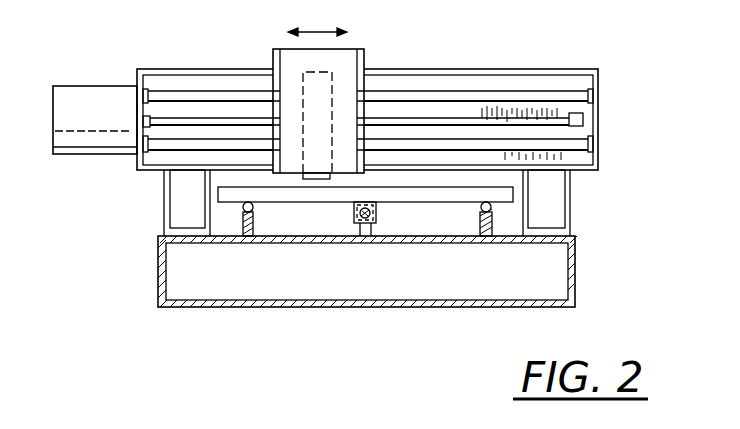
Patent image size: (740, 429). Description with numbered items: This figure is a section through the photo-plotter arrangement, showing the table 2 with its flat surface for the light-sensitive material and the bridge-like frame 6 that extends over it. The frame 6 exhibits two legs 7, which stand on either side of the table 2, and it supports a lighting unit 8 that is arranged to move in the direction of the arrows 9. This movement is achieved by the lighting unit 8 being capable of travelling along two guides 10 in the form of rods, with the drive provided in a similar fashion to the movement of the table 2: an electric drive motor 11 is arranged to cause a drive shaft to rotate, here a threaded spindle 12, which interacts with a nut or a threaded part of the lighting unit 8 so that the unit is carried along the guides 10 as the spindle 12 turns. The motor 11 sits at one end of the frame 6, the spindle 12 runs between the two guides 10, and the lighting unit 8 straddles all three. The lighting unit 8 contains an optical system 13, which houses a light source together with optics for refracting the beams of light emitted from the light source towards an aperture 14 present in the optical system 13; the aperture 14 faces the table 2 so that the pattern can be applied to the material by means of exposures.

The table 2 is at (513, 193).
The bridge-like frame 6 is at (553, 70).
The legs 7 is at (165, 212).
The lighting unit 8 is at (367, 53).
The arrows 9 is at (320, 31).
The guides 10 is at (222, 92).
The electric drive motor 11 is at (88, 108).
The threaded spindle 12 is at (160, 119).
The optical system 13 is at (330, 145).
The aperture 14 is at (320, 179).